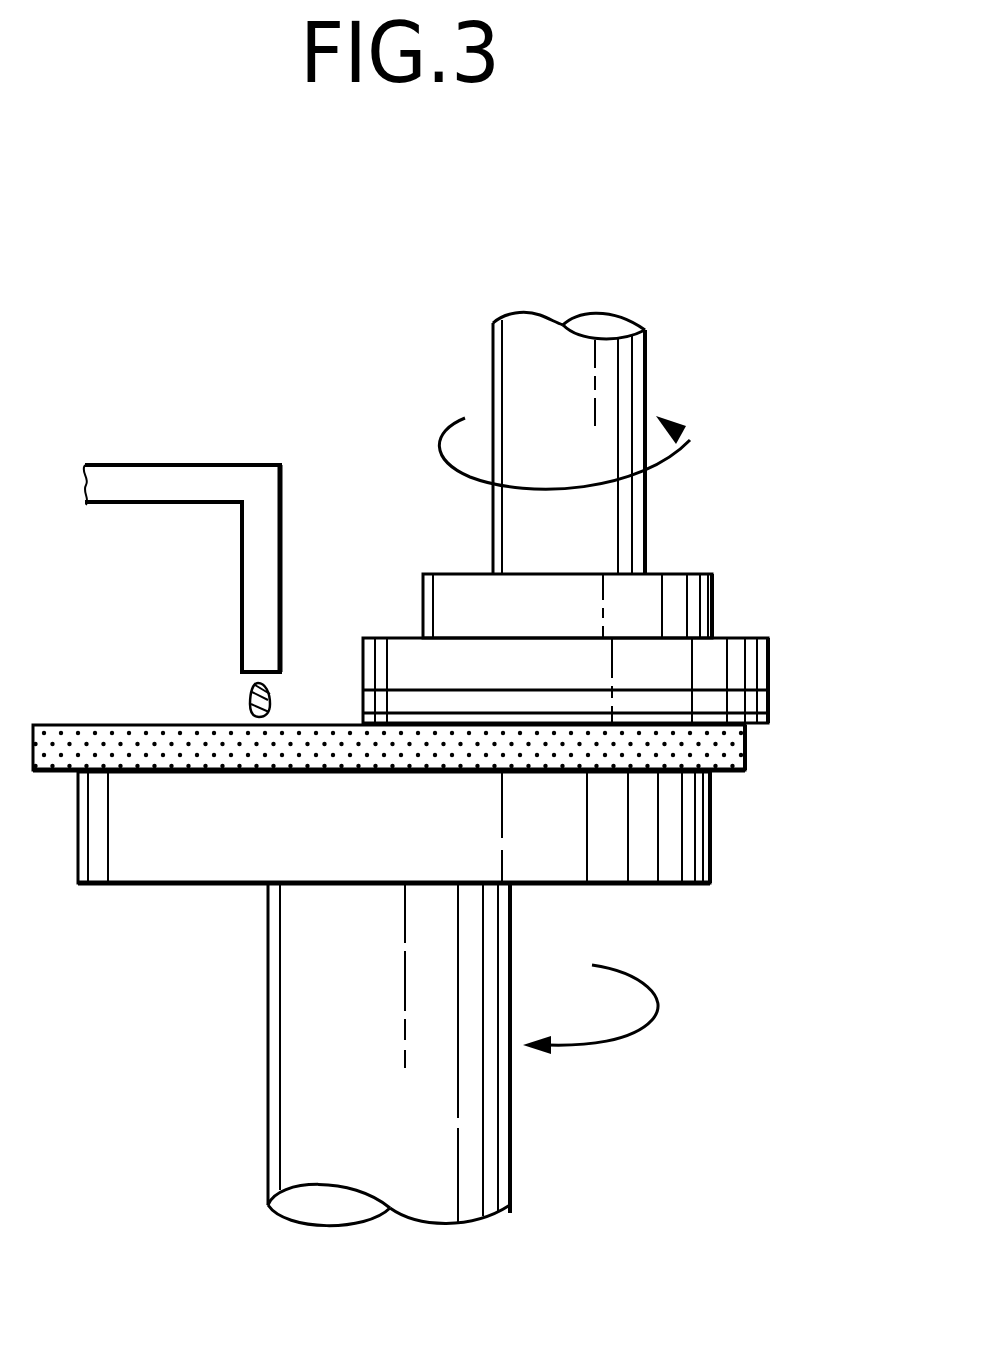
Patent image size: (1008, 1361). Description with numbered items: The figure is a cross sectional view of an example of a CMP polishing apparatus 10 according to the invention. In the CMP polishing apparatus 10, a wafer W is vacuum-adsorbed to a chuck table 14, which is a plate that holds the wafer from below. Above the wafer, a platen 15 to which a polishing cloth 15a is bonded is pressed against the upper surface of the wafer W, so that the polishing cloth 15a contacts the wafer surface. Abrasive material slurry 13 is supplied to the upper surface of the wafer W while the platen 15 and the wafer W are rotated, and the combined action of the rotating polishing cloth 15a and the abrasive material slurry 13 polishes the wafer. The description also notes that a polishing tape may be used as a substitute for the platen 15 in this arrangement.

The CMP polishing apparatus 10 is at (805, 450).
The abrasive material slurry 13 is at (250, 700).
The chuck table 14 is at (690, 830).
The platen 15 is at (765, 702).
The polishing cloth 15a is at (767, 720).
The wafer W is at (747, 747).